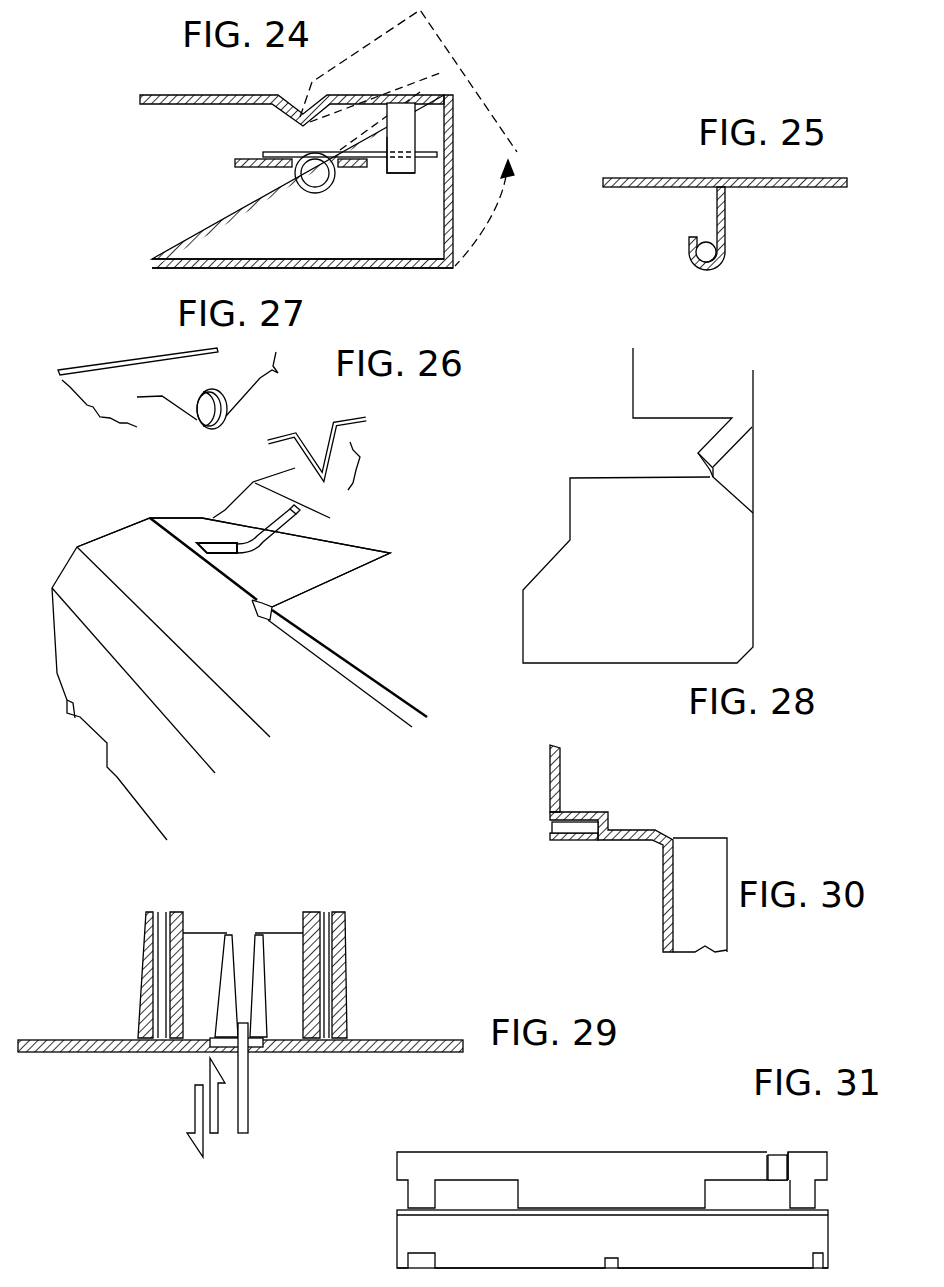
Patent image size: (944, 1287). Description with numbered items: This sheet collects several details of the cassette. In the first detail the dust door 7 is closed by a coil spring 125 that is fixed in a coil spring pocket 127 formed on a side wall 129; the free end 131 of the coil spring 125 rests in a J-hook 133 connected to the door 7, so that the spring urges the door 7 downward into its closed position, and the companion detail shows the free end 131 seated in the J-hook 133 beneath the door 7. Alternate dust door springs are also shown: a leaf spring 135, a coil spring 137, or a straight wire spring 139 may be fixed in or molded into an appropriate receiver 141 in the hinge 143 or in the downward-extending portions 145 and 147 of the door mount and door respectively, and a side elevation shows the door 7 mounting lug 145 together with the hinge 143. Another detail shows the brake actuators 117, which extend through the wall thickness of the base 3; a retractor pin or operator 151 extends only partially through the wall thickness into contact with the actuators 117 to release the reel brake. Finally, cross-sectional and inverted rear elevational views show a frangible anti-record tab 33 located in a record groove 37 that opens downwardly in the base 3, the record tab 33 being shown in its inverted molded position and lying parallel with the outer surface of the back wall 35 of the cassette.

In FIG. 30, the base 3 is at (550, 788).
In FIG. 29, the base 3 is at (398, 1038).
In FIG. 31, the base 3 is at (653, 1152).
In FIG. 24, the dust door 7 is at (453, 212).
In FIG. 25, the dust door 7 is at (833, 186).
In FIG. 26, the dust door 7 is at (270, 680).
In FIG. 28, the dust door 7 is at (522, 633).
In FIG. 30, the frangible anti-record tab 33 is at (572, 825).
In FIG. 31, the frangible anti-record tab 33 is at (767, 1172).
In FIG. 30, the back wall 35 is at (637, 840).
In FIG. 31, the back wall 35 is at (802, 1163).
In FIG. 30, the record groove 37 is at (562, 837).
In FIG. 31, the record groove 37 is at (773, 1155).
In FIG. 29, the brake actuators 117 is at (232, 935).
In FIG. 24, the coil spring 125 is at (330, 186).
In FIG. 24, the coil spring pocket 127 is at (248, 152).
In FIG. 24, the side wall 129 is at (142, 123).
In FIG. 24, the free end 131 is at (427, 160).
In FIG. 25, the free end 131 is at (711, 243).
In FIG. 24, the J-hook 133 is at (387, 137).
In FIG. 25, the J-hook 133 is at (726, 236).
In FIG. 26, the leaf spring 135 is at (367, 420).
In FIG. 27, the coil spring 137 is at (207, 380).
In FIG. 27, the straight wire spring 139 is at (155, 360).
In FIG. 26, the receiver 141 is at (330, 512).
In FIG. 26, the hinge 143 is at (315, 578).
In FIG. 28, the hinge 143 is at (710, 468).
In FIG. 26, the downward-extending portion of door mount 145 is at (245, 500).
In FIG. 28, the downward-extending portion of door mount 145 is at (733, 447).
In FIG. 26, the downward-extending portion of door 147 is at (180, 517).
In FIG. 29, the retractor pin 151 is at (248, 1118).